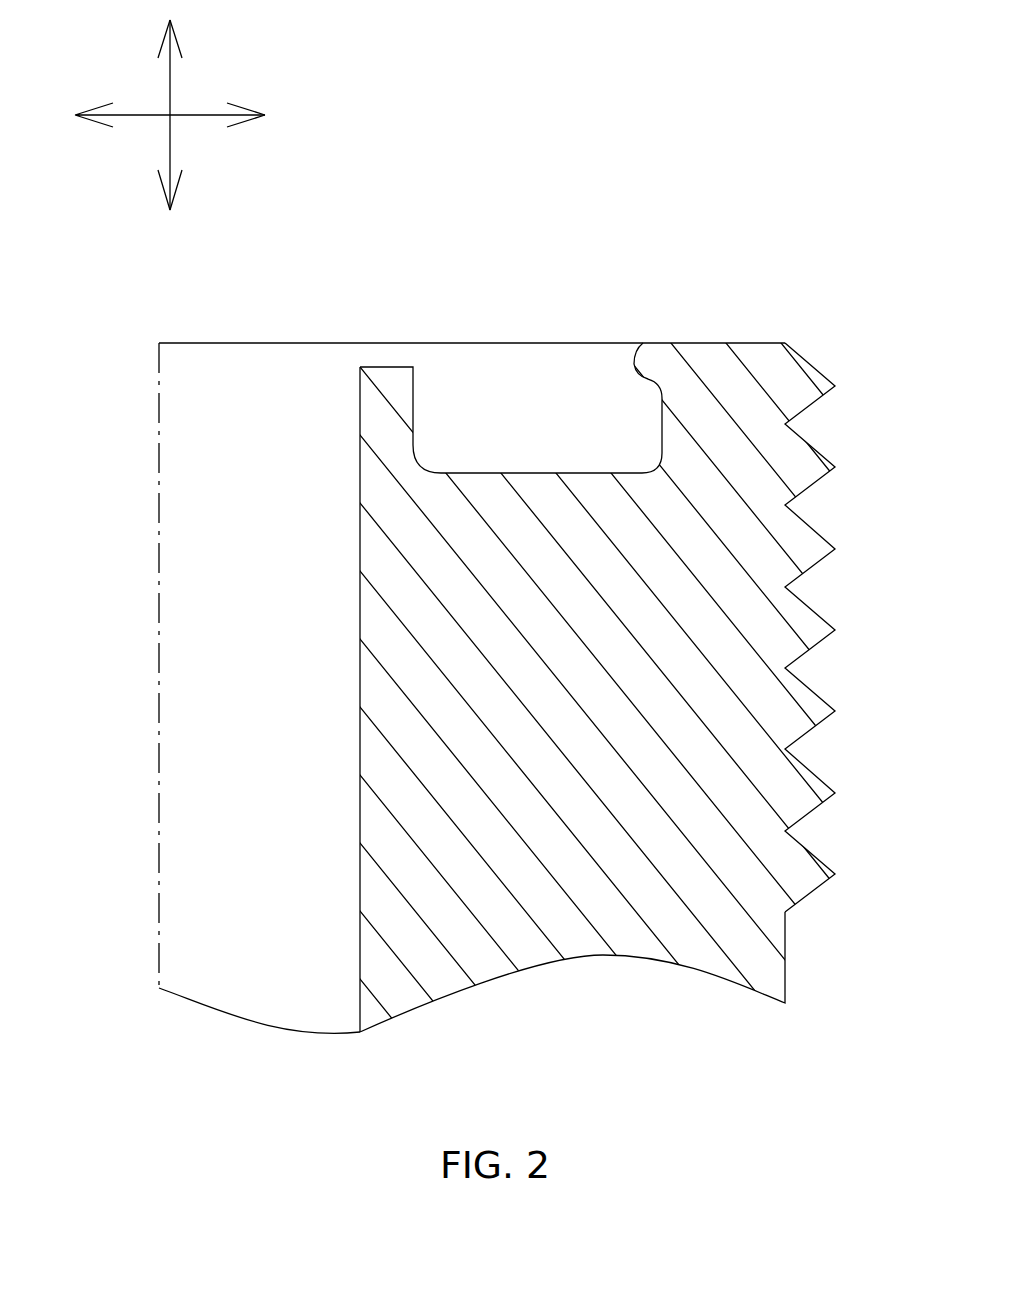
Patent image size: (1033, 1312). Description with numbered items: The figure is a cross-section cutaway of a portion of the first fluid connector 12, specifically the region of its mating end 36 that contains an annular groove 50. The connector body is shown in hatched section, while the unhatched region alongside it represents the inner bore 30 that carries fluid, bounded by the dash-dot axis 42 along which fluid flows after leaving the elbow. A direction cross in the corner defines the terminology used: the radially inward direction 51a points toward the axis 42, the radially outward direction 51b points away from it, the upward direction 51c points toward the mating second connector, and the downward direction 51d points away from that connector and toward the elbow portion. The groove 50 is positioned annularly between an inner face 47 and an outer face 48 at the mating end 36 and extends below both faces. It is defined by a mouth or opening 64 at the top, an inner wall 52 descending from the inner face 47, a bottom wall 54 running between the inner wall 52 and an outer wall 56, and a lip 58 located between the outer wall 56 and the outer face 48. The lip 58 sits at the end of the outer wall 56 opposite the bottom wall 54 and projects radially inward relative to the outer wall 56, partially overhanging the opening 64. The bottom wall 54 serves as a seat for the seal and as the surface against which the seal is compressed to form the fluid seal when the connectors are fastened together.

The first fluid connector 12 is at (450, 656).
The inner bore 30 is at (450, 656).
The mating end 36 is at (285, 473).
The axis 42 is at (159, 403).
The inner face 47 is at (392, 367).
The outer face 48 is at (715, 343).
The annular groove 50 is at (537, 357).
The radially inward direction 51a is at (132, 114).
The radially outward direction 51b is at (203, 116).
The upward direction 51c is at (170, 78).
The downward direction 51d is at (170, 144).
The inner wall 52 is at (413, 395).
The bottom wall 54 is at (540, 473).
The outer wall 56 is at (662, 424).
The lip 58 is at (637, 374).
The opening 64 is at (490, 344).